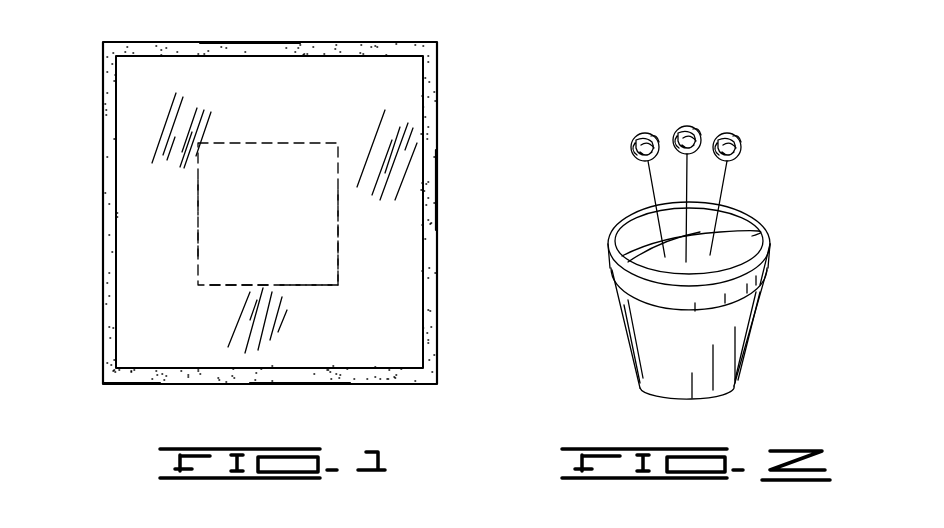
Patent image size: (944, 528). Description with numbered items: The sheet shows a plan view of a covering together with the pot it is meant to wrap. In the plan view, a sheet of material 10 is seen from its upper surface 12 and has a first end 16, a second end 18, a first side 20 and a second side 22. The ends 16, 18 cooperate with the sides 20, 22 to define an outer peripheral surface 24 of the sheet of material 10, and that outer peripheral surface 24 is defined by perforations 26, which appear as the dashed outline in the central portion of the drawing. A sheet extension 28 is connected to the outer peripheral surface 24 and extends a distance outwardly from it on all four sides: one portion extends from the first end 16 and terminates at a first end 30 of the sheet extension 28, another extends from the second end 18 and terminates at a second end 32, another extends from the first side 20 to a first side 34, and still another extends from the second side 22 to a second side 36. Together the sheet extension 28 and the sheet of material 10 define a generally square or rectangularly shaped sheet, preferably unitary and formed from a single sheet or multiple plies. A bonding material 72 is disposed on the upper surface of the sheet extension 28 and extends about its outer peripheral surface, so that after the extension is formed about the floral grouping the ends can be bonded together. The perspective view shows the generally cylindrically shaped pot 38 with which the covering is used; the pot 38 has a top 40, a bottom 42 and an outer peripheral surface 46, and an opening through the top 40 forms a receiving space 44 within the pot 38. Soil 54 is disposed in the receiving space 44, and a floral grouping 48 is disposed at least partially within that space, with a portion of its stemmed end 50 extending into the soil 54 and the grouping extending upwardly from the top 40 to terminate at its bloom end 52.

In FIG. 1, the sheet of material 10 is at (341, 205).
In FIG. 1, the upper surface 12 is at (303, 270).
In FIG. 1, the first end 16 is at (194, 199).
In FIG. 1, the second end 18 is at (338, 240).
In FIG. 1, the first side 20 is at (268, 142).
In FIG. 1, the second side 22 is at (240, 287).
In FIG. 1, the outer peripheral surface 24 is at (196, 247).
In FIG. 1, the perforations 26 is at (341, 266).
In FIG. 1, the sheet extension 28 is at (132, 372).
In FIG. 1, the first end 30 is at (101, 200).
In FIG. 1, the second end 32 is at (438, 188).
In FIG. 1, the first side 34 is at (265, 42).
In FIG. 1, the second side 36 is at (300, 380).
In FIG. 1, the bonding material 72 is at (206, 370).
In FIG. 2, the pot 38 is at (687, 295).
In FIG. 2, the top 40 is at (769, 243).
In FIG. 2, the bottom 42 is at (733, 386).
In FIG. 2, the receiving space 44 is at (647, 243).
In FIG. 2, the outer peripheral surface 46 is at (753, 312).
In FIG. 2, the floral grouping 48 is at (729, 182).
In FIG. 2, the stemmed end 50 is at (719, 225).
In FIG. 2, the bloom end 52 is at (633, 139).
In FIG. 2, the soil 54 is at (645, 262).